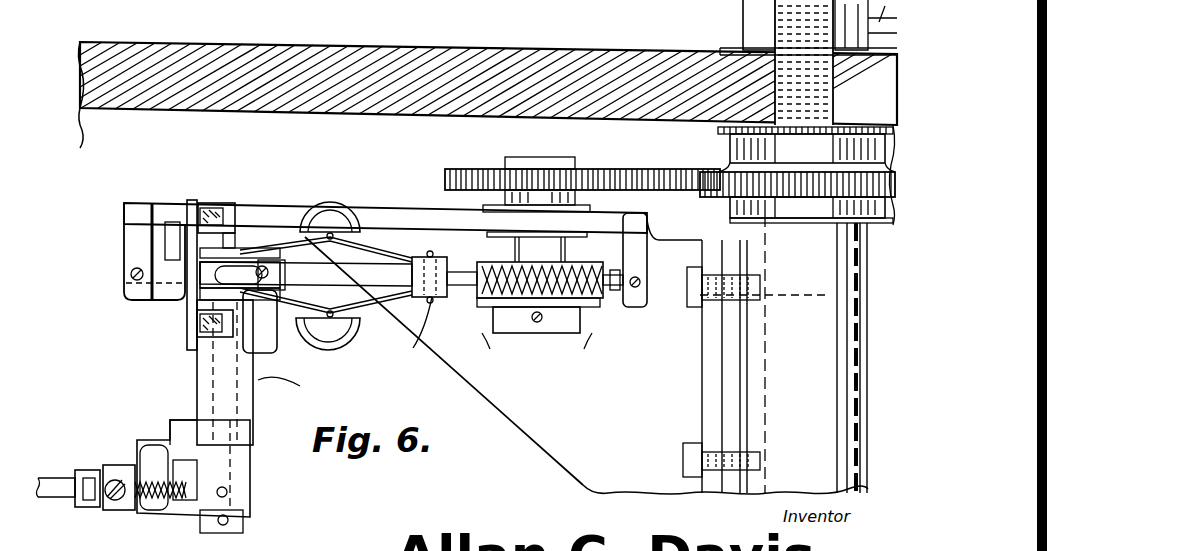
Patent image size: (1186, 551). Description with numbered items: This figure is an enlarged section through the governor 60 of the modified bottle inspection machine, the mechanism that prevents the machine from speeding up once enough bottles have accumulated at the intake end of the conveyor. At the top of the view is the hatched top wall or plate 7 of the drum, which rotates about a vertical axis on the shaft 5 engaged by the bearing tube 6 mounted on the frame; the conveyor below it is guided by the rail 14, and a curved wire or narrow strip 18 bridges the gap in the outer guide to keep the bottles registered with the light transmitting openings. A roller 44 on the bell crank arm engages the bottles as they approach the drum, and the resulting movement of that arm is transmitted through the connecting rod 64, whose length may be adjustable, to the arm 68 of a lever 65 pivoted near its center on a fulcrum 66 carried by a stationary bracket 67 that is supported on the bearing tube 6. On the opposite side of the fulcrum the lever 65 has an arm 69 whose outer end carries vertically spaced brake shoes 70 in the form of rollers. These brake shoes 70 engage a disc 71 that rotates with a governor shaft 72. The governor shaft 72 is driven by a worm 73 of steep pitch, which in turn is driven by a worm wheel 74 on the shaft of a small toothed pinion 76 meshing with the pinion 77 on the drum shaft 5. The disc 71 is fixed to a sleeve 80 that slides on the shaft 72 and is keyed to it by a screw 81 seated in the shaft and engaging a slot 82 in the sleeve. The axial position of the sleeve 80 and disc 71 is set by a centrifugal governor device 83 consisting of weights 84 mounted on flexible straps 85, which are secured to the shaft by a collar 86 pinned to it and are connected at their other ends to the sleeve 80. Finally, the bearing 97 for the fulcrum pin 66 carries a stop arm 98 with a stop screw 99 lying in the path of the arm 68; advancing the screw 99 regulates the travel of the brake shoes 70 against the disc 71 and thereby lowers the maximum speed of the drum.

The shaft 5 is at (743, 17).
The bearing tube 6 is at (876, 333).
The top wall or plate 7 is at (630, 49).
The guiding and supporting rail 14 is at (604, 19).
The wire or narrow strip 18 is at (487, 8).
The roller 44 is at (297, 6).
The governor 60 is at (461, 306).
The connecting rod 64 is at (48, 478).
The lever 65 is at (202, 502).
The fulcrum 66 is at (255, 407).
The stationary bracket 67 is at (497, 401).
The arm 68 is at (115, 465).
The arm 69 is at (245, 248).
The brake shoes 70 is at (215, 203).
The disc 71 is at (187, 200).
The governor shaft 72 is at (364, 256).
The worm 73 is at (596, 310).
The worm wheel 74 is at (481, 324).
The toothed pinion 76 is at (466, 169).
The pinion 77 is at (665, 172).
The sleeve 80 is at (263, 360).
The screw 81 is at (277, 260).
The slot 82 is at (300, 282).
The centrifugal governor device 83 is at (330, 204).
The weights 84 is at (350, 216).
The flexible straps 85 is at (400, 248).
The collar 86 is at (410, 340).
The bearing 97 is at (300, 388).
The stop arm 98 is at (177, 443).
The stop screw 99 is at (100, 507).